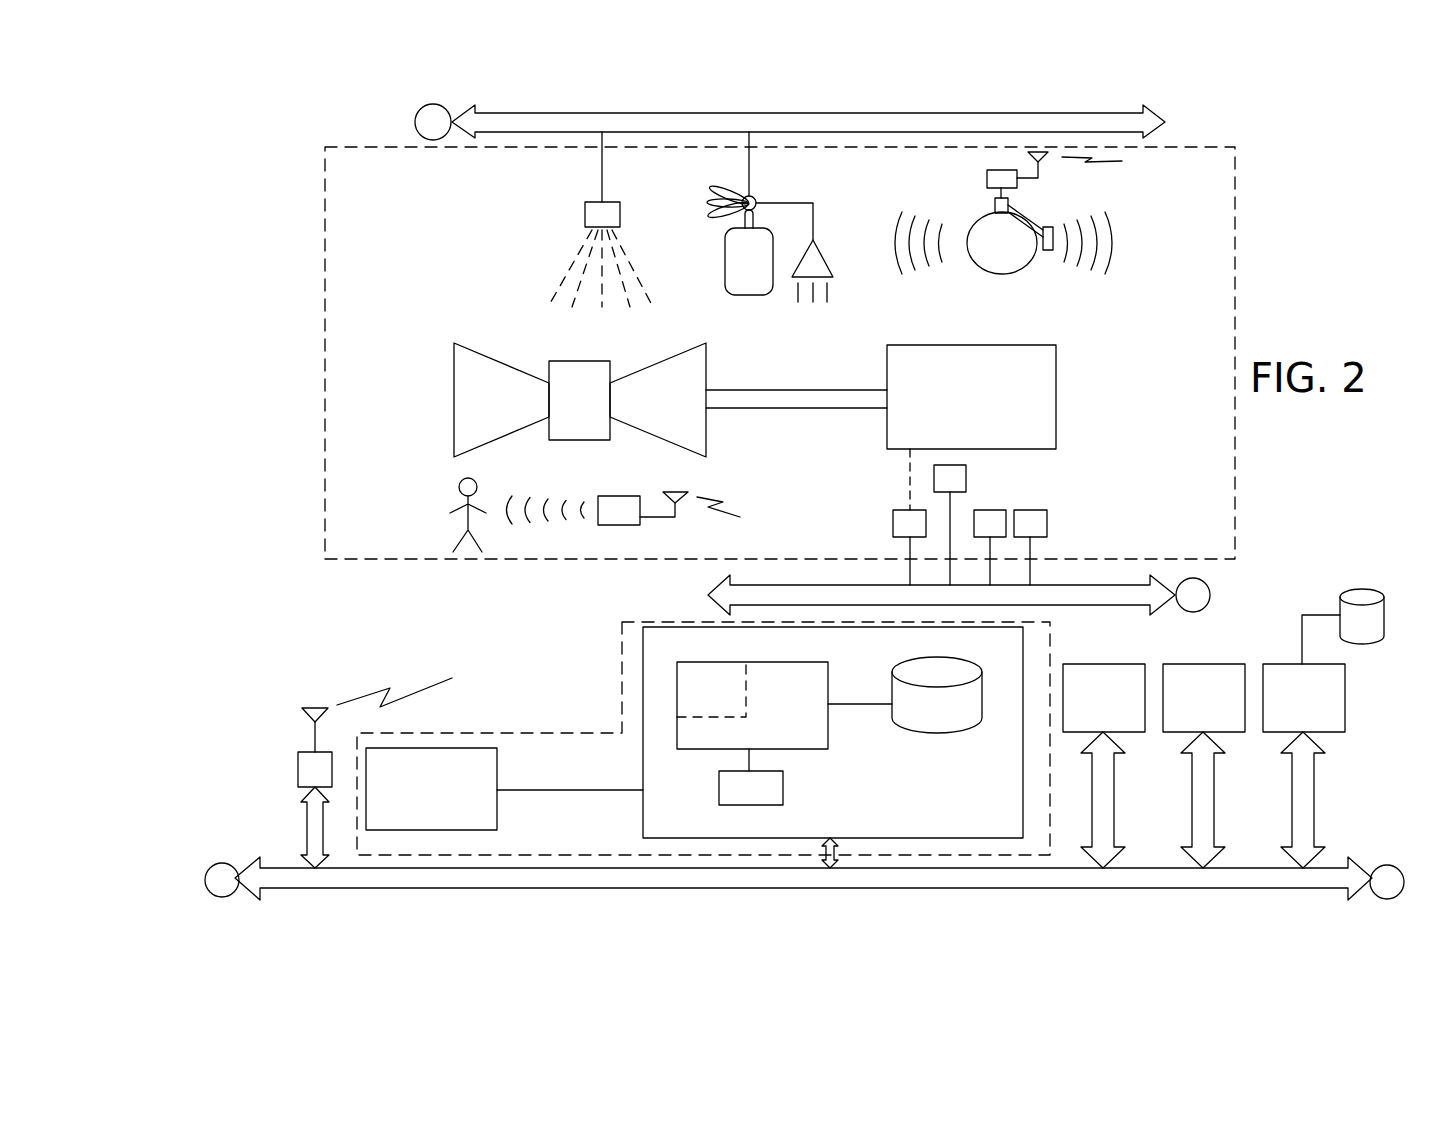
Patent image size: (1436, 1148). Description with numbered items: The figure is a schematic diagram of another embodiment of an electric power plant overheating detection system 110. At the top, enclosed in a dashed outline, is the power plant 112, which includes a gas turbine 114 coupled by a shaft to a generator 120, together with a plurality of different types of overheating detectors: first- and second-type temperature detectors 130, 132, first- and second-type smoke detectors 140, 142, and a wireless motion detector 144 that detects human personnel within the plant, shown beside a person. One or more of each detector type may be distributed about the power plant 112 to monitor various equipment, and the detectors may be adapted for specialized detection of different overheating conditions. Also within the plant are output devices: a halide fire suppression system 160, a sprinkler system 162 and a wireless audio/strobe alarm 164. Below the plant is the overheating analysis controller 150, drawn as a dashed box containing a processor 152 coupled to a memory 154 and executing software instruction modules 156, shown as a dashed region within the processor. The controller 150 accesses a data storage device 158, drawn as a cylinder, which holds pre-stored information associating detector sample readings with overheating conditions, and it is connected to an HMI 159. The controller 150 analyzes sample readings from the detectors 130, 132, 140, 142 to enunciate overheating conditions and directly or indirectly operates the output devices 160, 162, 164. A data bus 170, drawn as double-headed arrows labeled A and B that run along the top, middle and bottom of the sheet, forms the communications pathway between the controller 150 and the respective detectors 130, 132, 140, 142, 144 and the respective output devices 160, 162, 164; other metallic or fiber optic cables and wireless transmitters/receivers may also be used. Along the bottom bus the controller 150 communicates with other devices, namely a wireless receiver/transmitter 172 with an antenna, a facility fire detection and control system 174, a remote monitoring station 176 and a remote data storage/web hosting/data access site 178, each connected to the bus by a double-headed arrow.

The detection system 110 is at (722, 364).
The power plant 112 is at (290, 287).
The gas turbine 114 is at (634, 337).
The generator 120 is at (997, 326).
The first-type temperature detector 130 is at (893, 525).
The second-type temperature detector 132 is at (967, 475).
The first-type smoke detector 140 is at (1000, 510).
The second-type smoke detector 142 is at (1047, 525).
The wireless motion detector 144 is at (623, 513).
The overheating analysis controller 150 is at (703, 745).
The processor 152 is at (813, 745).
The memory 154 is at (767, 798).
The software instruction modules 156 is at (690, 702).
The data storage device 158 is at (967, 718).
The HMI 159 is at (497, 812).
The halide fire suppression system 160 is at (773, 282).
The sprinkler system 162 is at (585, 215).
The wireless audio/strobe alarm 164 is at (980, 268).
The data bus 170 is at (1167, 121).
The wireless receiver/transmitter 172 is at (298, 775).
The facility fire detection and control system 174 is at (1105, 678).
The remote monitoring station 176 is at (1213, 678).
The remote data storage/web hosting/data access site 178 is at (1333, 717).